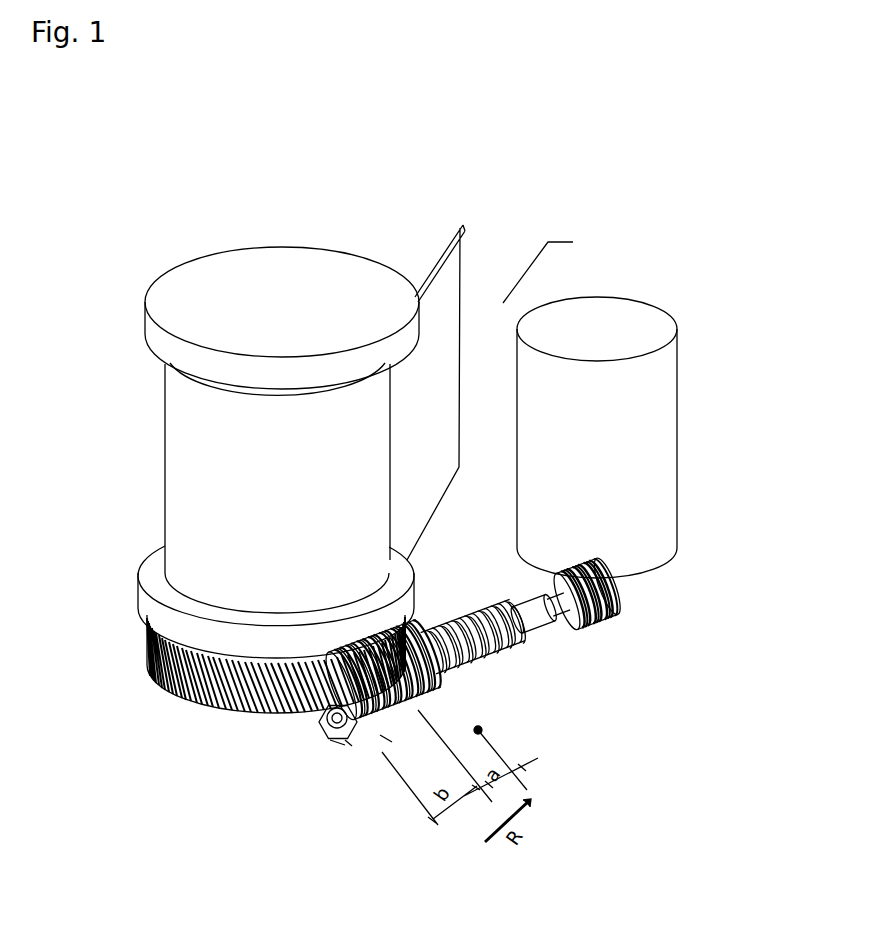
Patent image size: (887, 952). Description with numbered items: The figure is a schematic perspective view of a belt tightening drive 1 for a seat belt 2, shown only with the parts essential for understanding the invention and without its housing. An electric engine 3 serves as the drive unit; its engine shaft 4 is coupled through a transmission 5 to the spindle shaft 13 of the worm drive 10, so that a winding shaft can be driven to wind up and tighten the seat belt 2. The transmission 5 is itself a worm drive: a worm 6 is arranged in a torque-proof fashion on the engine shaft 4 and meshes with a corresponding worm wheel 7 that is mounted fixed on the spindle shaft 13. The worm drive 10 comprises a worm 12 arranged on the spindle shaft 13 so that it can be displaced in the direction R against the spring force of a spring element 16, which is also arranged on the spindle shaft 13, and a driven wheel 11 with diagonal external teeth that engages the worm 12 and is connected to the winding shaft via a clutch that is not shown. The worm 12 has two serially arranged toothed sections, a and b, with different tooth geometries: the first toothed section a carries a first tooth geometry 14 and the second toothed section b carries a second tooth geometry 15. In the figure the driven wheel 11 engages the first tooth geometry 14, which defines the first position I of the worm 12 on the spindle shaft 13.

The belt tightening drive 1 is at (503, 303).
The seat belt 2 is at (462, 233).
The electric engine 3 is at (600, 413).
The engine shaft 4 is at (180, 430).
The transmission 5 is at (597, 640).
The worm 6 is at (613, 620).
The worm wheel 7 is at (520, 570).
The worm drive 10 is at (308, 723).
The driven wheel 11 is at (157, 687).
The worm 12 is at (347, 743).
The spindle shaft 13 is at (323, 742).
The first tooth geometry 14 is at (447, 688).
The second tooth geometry 15 is at (387, 740).
The spring element 16 is at (513, 657).
The first position I is at (482, 732).